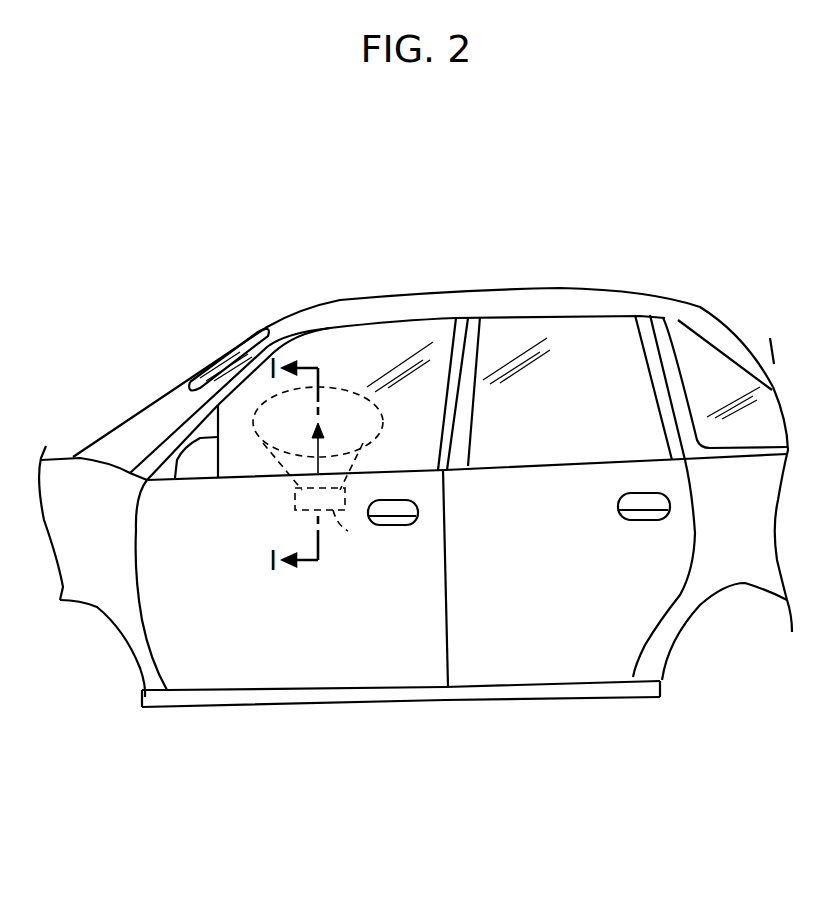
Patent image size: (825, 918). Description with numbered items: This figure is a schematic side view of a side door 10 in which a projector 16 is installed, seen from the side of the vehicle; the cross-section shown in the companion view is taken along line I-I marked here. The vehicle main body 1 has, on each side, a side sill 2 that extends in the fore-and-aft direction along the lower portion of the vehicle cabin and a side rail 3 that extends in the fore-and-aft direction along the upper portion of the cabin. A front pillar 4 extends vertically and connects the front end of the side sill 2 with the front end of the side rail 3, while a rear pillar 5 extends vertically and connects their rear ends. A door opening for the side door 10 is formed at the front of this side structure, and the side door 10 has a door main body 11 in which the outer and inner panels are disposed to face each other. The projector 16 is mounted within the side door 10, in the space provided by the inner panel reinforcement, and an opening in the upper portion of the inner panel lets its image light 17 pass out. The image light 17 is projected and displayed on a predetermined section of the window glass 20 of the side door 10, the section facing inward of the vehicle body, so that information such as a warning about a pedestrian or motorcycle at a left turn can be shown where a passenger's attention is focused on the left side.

The vehicle main body 1 is at (362, 274).
The side sill 2 is at (353, 700).
The side rail 3 is at (475, 300).
The front pillar 4 is at (198, 420).
The rear pillar 5 is at (668, 360).
The side door 10 is at (412, 332).
The door main body 11 is at (282, 672).
The projector 16 is at (345, 528).
The image light 17 is at (358, 407).
The window glass 20 is at (327, 343).